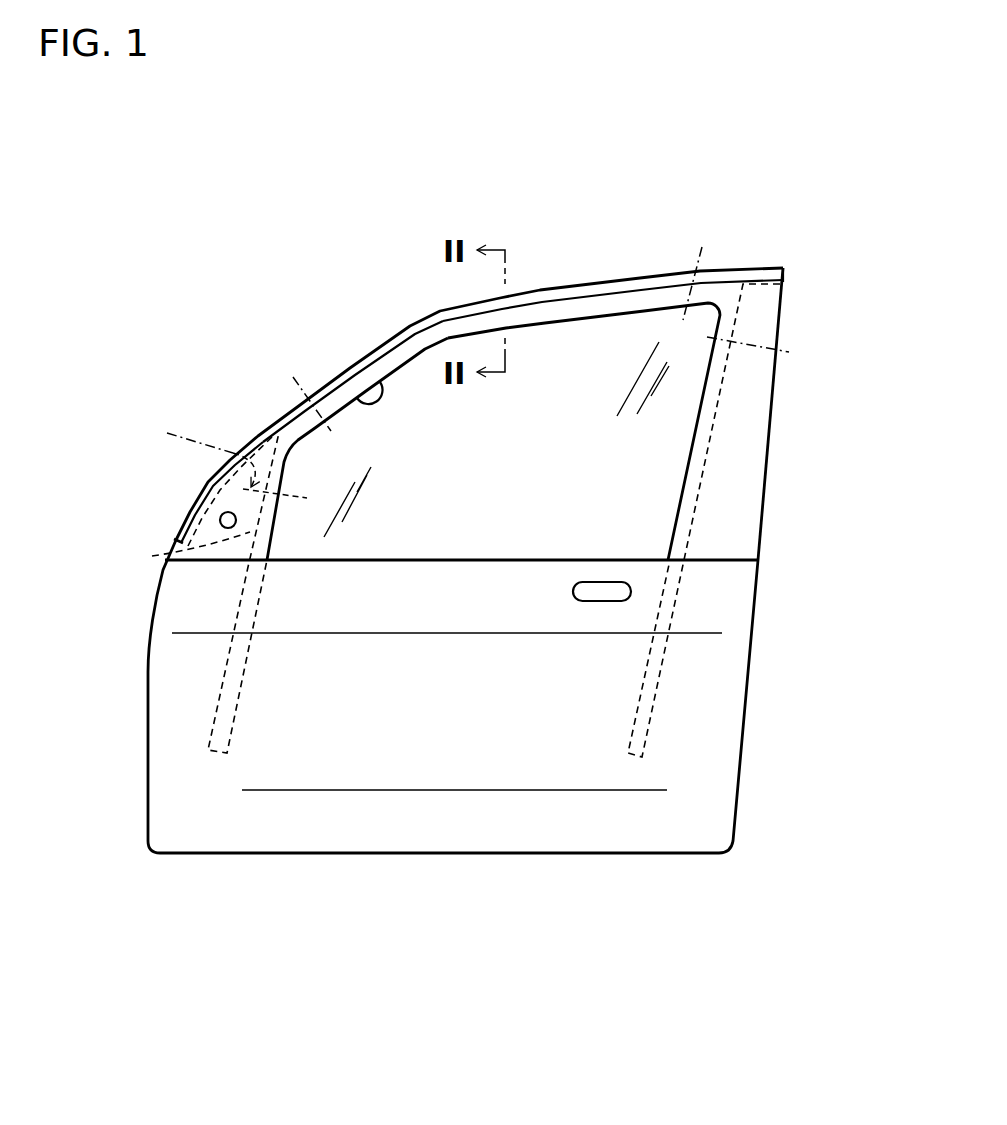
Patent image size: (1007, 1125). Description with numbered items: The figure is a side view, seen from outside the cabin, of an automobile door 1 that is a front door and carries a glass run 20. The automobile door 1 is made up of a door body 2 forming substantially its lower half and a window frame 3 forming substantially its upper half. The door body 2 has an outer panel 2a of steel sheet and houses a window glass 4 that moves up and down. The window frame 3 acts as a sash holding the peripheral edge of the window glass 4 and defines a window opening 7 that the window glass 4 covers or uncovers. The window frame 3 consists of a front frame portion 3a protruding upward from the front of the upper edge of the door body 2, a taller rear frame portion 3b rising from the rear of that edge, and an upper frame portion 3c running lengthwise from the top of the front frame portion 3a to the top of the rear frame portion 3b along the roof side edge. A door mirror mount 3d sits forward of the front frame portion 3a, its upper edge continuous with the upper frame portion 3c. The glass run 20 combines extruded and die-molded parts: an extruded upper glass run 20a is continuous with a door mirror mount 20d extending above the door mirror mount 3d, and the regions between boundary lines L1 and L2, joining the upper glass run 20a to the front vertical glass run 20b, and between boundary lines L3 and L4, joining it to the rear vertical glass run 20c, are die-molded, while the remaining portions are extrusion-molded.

The automobile door 1 is at (408, 232).
The door body 2 is at (742, 762).
The outer panel 2a is at (447, 835).
The window frame 3 is at (779, 378).
The front frame portion 3a is at (273, 472).
The rear frame portion 3b is at (750, 447).
The upper frame portion 3c is at (404, 326).
The door mirror mount 3d is at (227, 495).
The window glass 4 is at (598, 343).
The window opening 7 is at (357, 397).
The glass run 20 is at (530, 290).
The upper glass run 20a is at (553, 302).
The front vertical glass run 20b is at (185, 595).
The rear vertical glass run 20c is at (700, 488).
The door mirror mount 20d is at (175, 523).
The boundary line L1 is at (337, 431).
The boundary line L2 is at (217, 458).
The boundary line L3 is at (700, 247).
The boundary line L4 is at (767, 336).